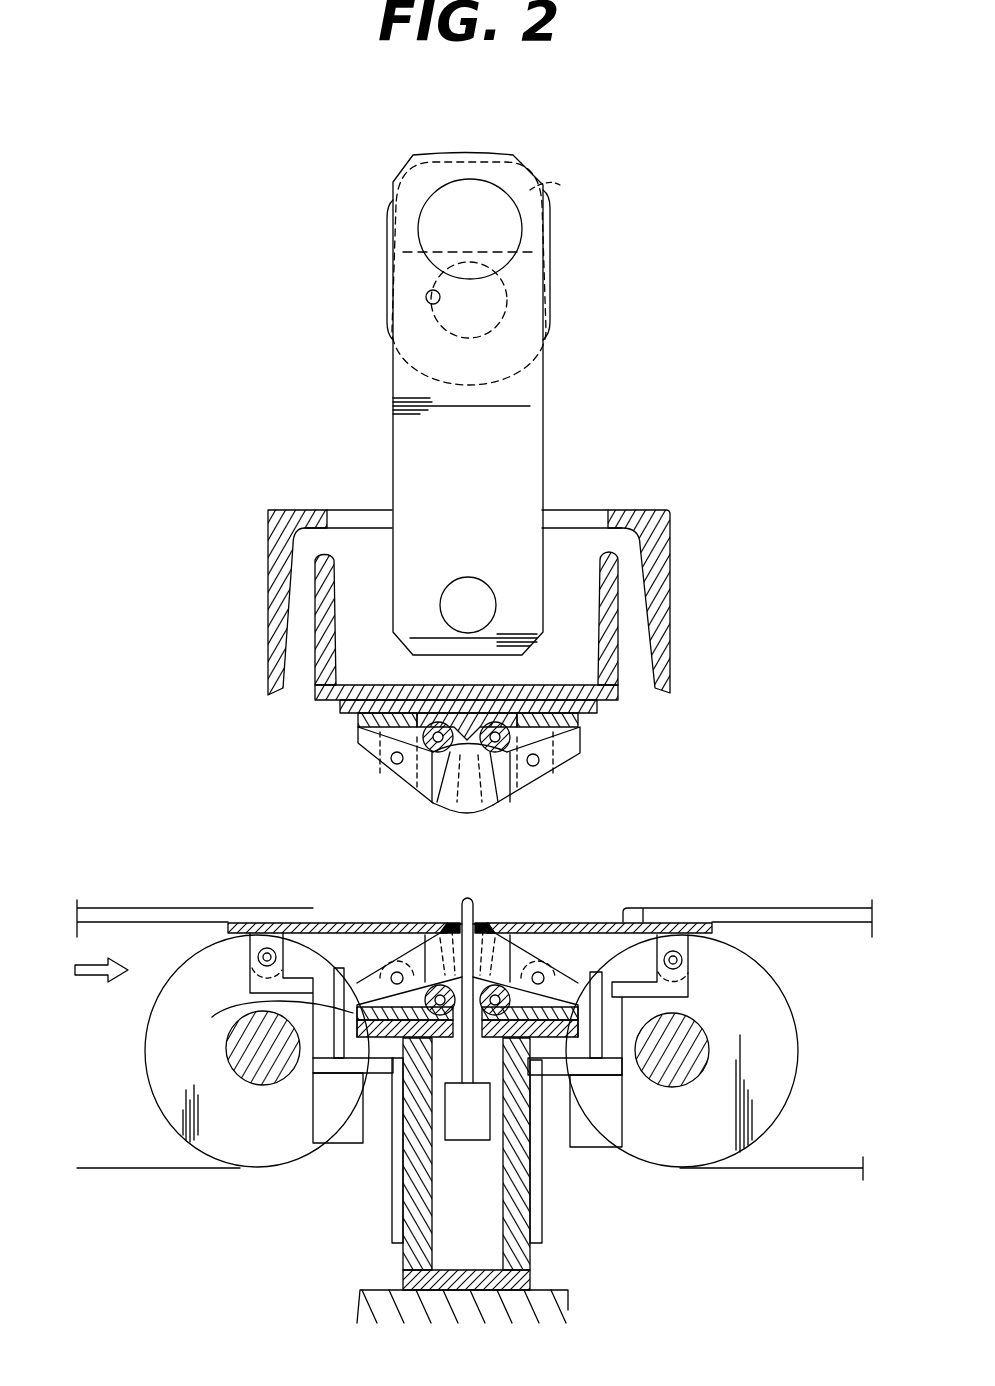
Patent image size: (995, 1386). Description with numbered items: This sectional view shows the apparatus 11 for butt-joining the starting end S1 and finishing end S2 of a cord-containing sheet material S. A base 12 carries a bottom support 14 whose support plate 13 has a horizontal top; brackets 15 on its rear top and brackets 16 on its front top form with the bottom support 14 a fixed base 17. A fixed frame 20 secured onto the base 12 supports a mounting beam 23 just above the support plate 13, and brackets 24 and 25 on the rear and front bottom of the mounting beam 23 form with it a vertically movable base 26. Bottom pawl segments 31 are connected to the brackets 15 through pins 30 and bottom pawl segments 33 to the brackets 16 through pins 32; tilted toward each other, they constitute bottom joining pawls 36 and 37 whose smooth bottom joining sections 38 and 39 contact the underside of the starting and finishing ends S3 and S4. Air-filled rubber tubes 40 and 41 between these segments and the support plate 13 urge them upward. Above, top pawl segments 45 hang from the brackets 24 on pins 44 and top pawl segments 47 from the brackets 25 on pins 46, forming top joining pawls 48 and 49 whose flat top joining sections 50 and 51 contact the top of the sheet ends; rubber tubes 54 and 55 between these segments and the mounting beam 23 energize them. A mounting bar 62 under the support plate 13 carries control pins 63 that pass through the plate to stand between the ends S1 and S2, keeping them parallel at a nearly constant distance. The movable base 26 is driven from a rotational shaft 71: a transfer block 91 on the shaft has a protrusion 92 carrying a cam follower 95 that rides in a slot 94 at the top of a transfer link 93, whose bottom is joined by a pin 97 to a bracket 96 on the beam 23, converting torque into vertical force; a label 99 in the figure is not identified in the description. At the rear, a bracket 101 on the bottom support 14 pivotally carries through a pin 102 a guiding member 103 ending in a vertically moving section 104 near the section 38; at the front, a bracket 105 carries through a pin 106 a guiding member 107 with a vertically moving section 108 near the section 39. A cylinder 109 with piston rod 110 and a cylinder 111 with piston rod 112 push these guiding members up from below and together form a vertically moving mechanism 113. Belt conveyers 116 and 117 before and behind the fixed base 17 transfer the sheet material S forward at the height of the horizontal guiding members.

The apparatus 11 is at (583, 408).
The base 12 is at (552, 1307).
The support plate 13 is at (570, 1050).
The bottom support 14 is at (403, 1255).
The brackets 15 is at (370, 1008).
The brackets 16 is at (578, 1007).
The fixed base 17 is at (542, 1258).
The fixed frame 20 is at (637, 518).
The mounting beam 23 is at (622, 698).
The brackets 24 is at (358, 722).
The brackets 25 is at (570, 757).
The vertically movable base 26 is at (596, 718).
The pins 30 is at (338, 925).
The bottom pawl segments 31 is at (377, 922).
The pins 32 is at (580, 923).
The bottom pawl segments 33 is at (543, 923).
The bottom joining pawl 36 is at (405, 935).
The bottom joining pawl 37 is at (523, 927).
The bottom joining section 38 is at (462, 900).
The bottom joining section 39 is at (483, 923).
The rubber tube 40 is at (430, 1047).
The rubber tube 41 is at (485, 1040).
The pins 44 is at (393, 757).
The top pawl segments 45 is at (407, 778).
The pins 46 is at (537, 770).
The top pawl segments 47 is at (508, 790).
The top joining pawl 48 is at (413, 793).
The top joining pawl 49 is at (507, 797).
The top joining section 50 is at (437, 805).
The top joining section 51 is at (473, 812).
The rubber tube 54 is at (413, 700).
The rubber tube 55 is at (513, 702).
The mounting bar 62 is at (463, 1135).
The control pins 63 is at (468, 1052).
The rotational shaft 71 is at (533, 343).
The transfer block 91 is at (393, 370).
The protrusion 92 is at (547, 180).
The transfer link 93 is at (522, 458).
The slot 94 is at (433, 293).
The cam follower 95 is at (428, 210).
The bracket 96 is at (358, 572).
The pin 97 is at (468, 593).
The surface 99 is at (576, 259).
The bracket 101 is at (250, 978).
The pin 102 is at (258, 953).
The guiding member 103 is at (318, 922).
The vertically moving section 104 is at (443, 925).
The bracket 105 is at (622, 1072).
The pin 106 is at (682, 960).
The guiding member 107 is at (598, 923).
The vertically moving section 108 is at (498, 923).
The cylinder 109 is at (320, 1124).
The piston rod 110 is at (214, 1016).
The cylinder 111 is at (608, 1132).
The piston rod 112 is at (595, 1027).
The vertically moving mechanism 113 is at (613, 1160).
The belt conveyer 116 is at (227, 1168).
The belt conveyer 117 is at (715, 1169).
The sheet material S is at (112, 905).
The starting end S1 is at (300, 922).
The finishing end S2 is at (622, 907).
The starting end S3 is at (255, 905).
The finishing end S4 is at (647, 908).